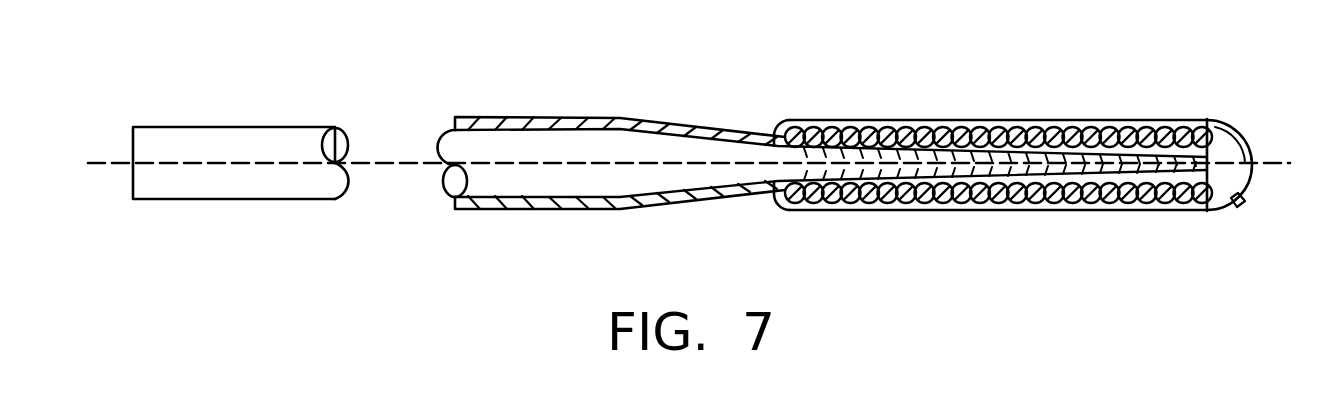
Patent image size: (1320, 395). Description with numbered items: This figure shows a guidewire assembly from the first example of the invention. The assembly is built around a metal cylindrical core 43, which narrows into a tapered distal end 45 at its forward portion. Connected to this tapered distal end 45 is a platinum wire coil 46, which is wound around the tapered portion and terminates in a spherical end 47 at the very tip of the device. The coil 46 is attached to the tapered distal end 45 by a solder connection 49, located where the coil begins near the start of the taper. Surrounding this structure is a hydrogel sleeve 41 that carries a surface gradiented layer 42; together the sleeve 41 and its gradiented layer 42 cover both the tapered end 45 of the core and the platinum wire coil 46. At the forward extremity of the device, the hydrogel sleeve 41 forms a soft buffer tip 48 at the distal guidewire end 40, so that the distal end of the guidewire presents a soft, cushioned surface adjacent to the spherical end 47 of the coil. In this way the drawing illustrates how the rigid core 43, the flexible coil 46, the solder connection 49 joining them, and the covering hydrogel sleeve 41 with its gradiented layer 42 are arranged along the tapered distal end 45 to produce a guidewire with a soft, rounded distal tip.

The distal guidewire end 40 is at (1150, 167).
The hydrogel sleeve 41 is at (488, 116).
The surface gradiented layer 42 is at (597, 117).
The metal cylindrical core 43 is at (255, 180).
The tapered distal end 45 is at (687, 182).
The platinum wire coil 46 is at (1019, 126).
The spherical end 47 is at (1233, 160).
The soft buffer tip 48 is at (1234, 210).
The solder connection 49 is at (830, 138).